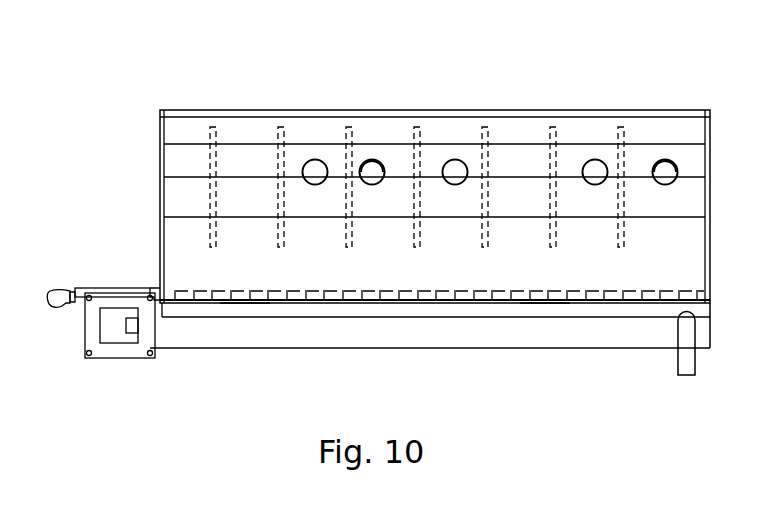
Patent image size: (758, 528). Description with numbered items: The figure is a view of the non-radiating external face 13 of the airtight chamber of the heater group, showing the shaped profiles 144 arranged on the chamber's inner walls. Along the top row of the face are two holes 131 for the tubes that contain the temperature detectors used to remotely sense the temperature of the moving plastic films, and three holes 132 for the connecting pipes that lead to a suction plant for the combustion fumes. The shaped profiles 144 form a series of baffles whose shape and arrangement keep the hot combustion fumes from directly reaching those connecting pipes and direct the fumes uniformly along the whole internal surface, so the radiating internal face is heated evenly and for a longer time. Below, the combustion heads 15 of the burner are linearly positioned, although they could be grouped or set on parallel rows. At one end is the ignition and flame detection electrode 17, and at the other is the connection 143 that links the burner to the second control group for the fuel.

The non-radiating external face 13 is at (152, 95).
The combustion head 15 is at (243, 303).
The ignition and flame detection electrode 17 is at (62, 291).
The holes for temperature detector tubes 131 is at (372, 160).
The holes for connecting pipes 132 is at (313, 160).
The connection 143 is at (684, 360).
The shaped profiles 144 is at (530, 223).